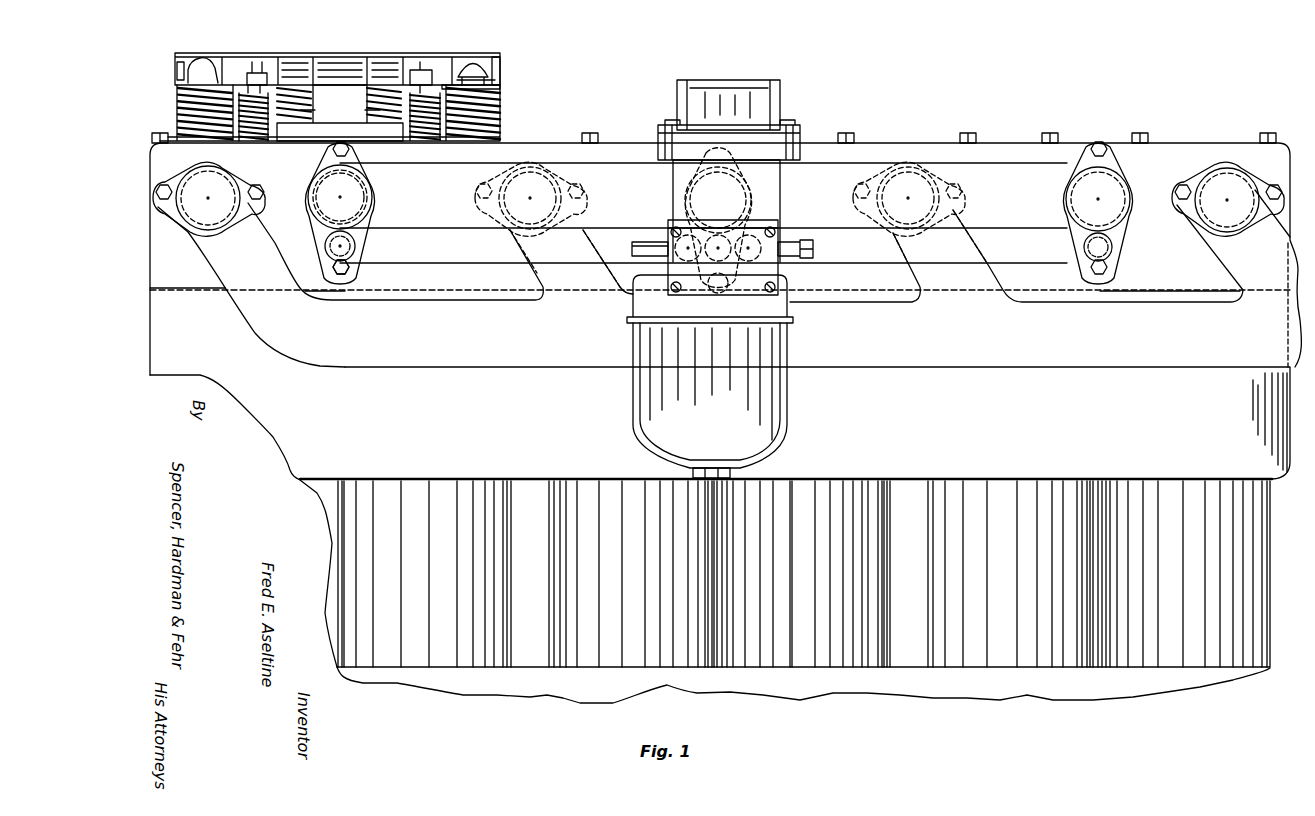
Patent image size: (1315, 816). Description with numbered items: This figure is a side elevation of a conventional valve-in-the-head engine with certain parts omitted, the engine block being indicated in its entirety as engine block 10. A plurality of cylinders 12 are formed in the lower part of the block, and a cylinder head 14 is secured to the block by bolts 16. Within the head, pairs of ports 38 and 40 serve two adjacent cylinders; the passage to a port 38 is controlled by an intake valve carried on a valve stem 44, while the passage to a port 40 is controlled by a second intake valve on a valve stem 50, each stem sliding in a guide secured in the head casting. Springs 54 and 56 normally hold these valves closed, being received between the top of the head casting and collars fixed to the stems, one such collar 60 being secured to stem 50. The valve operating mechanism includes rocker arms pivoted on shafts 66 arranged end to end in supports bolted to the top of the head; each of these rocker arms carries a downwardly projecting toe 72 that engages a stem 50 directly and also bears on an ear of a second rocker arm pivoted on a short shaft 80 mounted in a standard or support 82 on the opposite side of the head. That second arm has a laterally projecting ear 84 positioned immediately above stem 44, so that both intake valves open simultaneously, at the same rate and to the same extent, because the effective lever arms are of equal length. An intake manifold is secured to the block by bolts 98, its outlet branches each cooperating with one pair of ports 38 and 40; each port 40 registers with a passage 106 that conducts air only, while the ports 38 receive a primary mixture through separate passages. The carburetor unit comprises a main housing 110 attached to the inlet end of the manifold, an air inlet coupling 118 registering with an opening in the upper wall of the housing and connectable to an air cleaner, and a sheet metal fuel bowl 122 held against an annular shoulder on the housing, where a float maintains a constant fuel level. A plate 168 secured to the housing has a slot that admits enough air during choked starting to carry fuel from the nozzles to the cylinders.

The engine block 10 is at (1297, 510).
The cylinders 12 is at (1252, 592).
The cylinder head 14 is at (883, 150).
The bolts 16 is at (597, 135).
The ports 38 is at (356, 246).
The ports 40 is at (312, 182).
The valve stem 44 is at (250, 85).
The valve stem 50 is at (203, 78).
The spring 54 is at (258, 120).
The spring 56 is at (498, 110).
The collar 60 is at (178, 82).
The shafts 66 is at (500, 66).
The toe 72 is at (500, 85).
The short shaft 80 is at (420, 70).
The standard or support 82 is at (338, 58).
The ear 84 is at (460, 62).
The bolts 98 is at (340, 280).
The passage 106 is at (365, 190).
The main housing 110 is at (775, 193).
The air inlet coupling 118 is at (770, 90).
The sheet metal fuel bowl 122 is at (785, 341).
The plate 168 is at (708, 232).